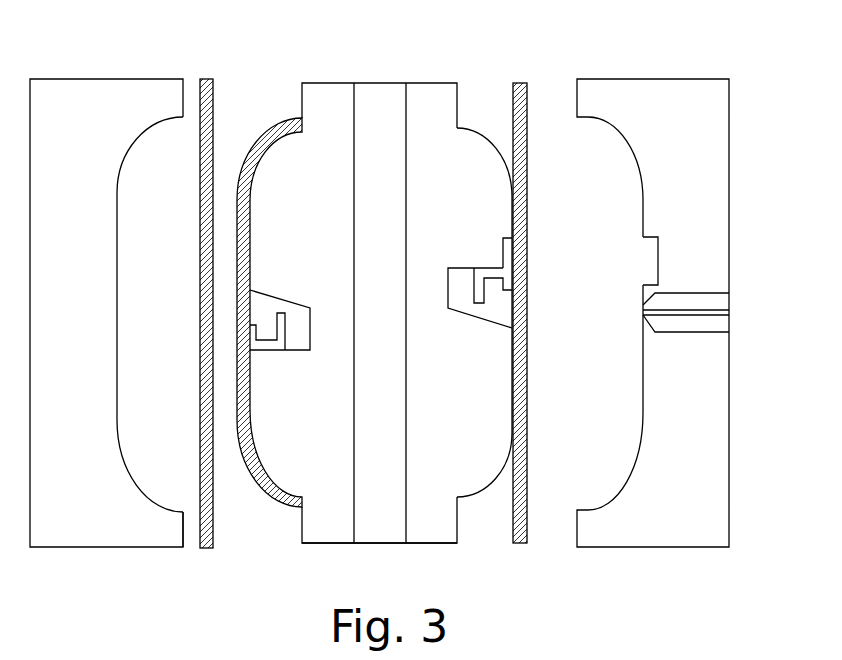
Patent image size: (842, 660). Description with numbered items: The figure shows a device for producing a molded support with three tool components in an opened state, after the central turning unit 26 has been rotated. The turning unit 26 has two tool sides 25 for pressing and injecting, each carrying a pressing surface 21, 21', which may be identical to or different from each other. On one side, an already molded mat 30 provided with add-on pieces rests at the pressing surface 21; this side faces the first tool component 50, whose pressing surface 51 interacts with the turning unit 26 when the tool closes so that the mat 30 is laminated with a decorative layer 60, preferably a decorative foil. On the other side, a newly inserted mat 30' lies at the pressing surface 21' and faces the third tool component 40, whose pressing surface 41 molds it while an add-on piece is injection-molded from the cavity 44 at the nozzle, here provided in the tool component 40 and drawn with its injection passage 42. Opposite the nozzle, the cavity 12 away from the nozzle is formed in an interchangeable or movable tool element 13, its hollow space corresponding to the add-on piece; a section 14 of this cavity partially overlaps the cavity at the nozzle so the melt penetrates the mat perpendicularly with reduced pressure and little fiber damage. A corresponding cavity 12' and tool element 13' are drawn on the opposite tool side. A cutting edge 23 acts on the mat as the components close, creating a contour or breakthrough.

The cavity away from the nozzle 12 is at (288, 361).
The pin / projection of the second coupling part 12' is at (474, 256).
The tool element 13 is at (298, 329).
The second coupling part recess 13' is at (466, 269).
The section 14 is at (505, 240).
The pressing surface 21 is at (260, 302).
The pressing surface 21' is at (486, 289).
The cutting edge 23 is at (185, 514).
The tool sides 25 is at (367, 306).
The turning unit 26 is at (380, 544).
The fiber mat 30 is at (269, 283).
The mat 30' is at (554, 313).
The third tool component 40 is at (687, 286).
The pressing surface 41 is at (642, 424).
The injection nozzle 42 is at (732, 308).
The cavity at the nozzle 44 is at (655, 241).
The first tool component 50 is at (107, 286).
The pressing surface 51 is at (118, 421).
The decorative layer 60 is at (206, 86).